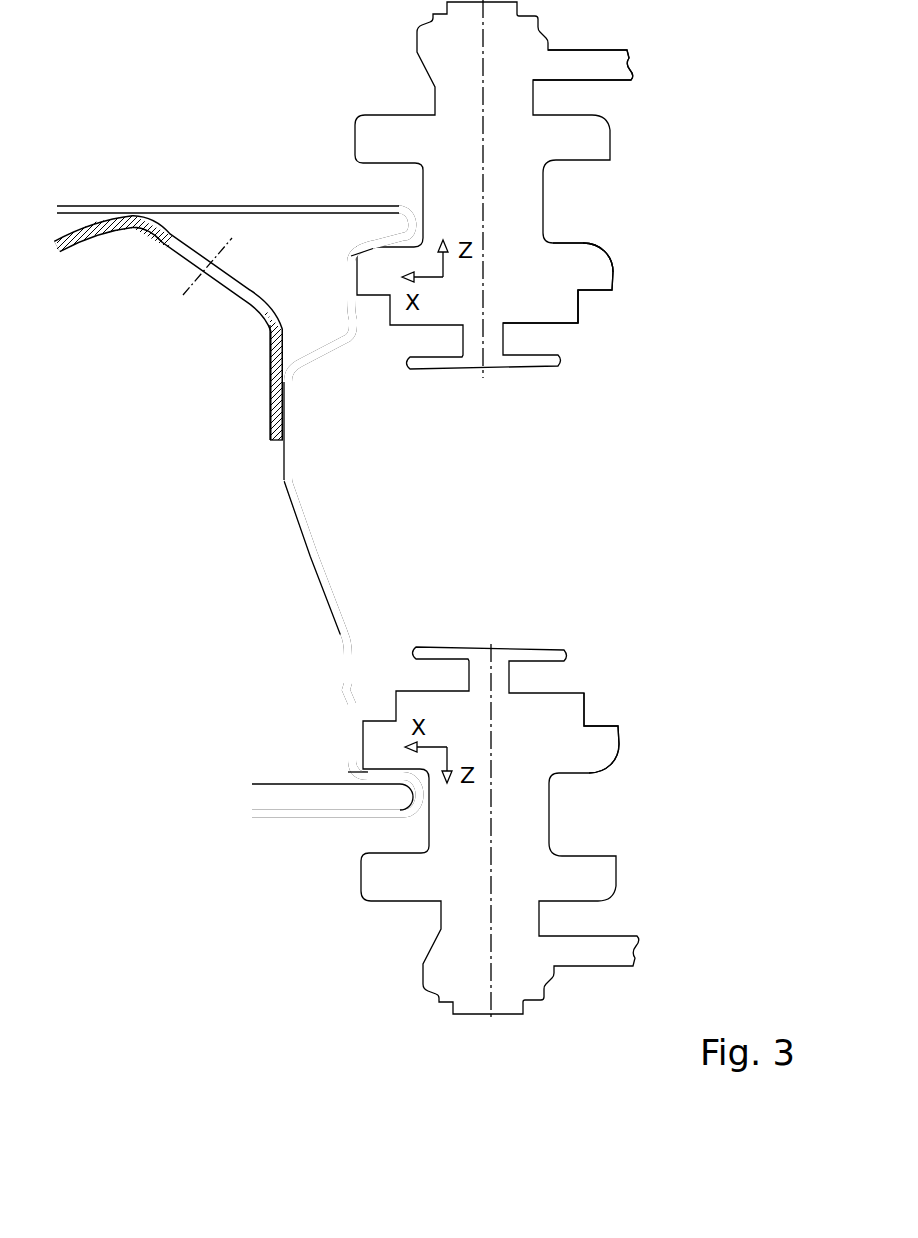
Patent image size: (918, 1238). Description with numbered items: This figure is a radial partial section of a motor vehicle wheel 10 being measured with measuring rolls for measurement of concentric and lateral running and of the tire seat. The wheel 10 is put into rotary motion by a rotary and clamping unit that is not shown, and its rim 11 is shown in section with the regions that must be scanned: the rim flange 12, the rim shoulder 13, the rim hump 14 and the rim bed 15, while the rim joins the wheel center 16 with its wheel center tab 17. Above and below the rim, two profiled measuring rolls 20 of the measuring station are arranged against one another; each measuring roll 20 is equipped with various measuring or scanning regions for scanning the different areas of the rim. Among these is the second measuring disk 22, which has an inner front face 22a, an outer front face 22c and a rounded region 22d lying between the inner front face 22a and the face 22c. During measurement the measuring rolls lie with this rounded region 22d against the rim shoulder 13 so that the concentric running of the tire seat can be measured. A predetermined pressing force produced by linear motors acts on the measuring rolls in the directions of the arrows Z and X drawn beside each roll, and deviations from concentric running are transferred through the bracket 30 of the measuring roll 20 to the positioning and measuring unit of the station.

The motor vehicle wheel 10 is at (320, 637).
The rim 11 is at (284, 477).
The rim flange 12 is at (398, 212).
The rim shoulder 13 is at (360, 250).
The rim hump 14 is at (345, 333).
The rim bed 15 is at (308, 557).
The wheel center 16 is at (137, 223).
The wheel center tab 17 is at (272, 360).
The profiled measuring roll 20 is at (513, 193).
The 2nd measuring disk 22 is at (610, 277).
The inner front face 22a is at (585, 242).
The outer front face 22c is at (578, 268).
The rounded region 22d is at (603, 250).
The bracket 30 is at (583, 63).